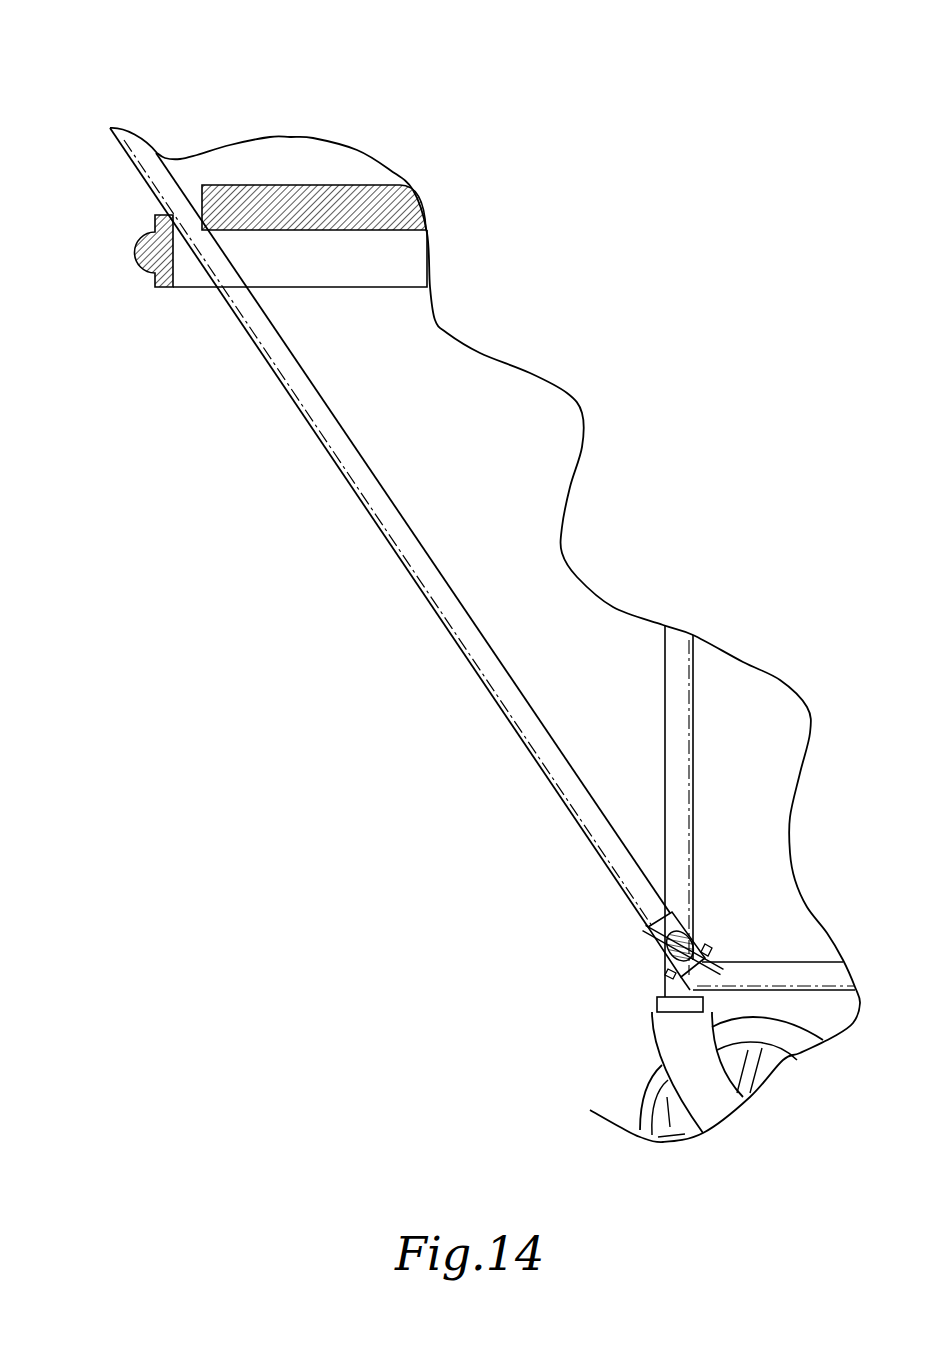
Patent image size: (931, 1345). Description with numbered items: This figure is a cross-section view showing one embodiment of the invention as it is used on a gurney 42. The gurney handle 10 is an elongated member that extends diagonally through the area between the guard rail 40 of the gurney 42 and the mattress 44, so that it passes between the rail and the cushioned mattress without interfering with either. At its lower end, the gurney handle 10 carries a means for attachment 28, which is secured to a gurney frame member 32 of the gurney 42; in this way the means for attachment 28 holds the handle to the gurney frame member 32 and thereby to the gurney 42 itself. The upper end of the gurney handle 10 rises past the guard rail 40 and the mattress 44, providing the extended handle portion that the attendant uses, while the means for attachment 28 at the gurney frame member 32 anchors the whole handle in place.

The gurney handle 10 is at (313, 437).
The guard rail 40 is at (132, 257).
The mattress 44 is at (310, 187).
The gurney 42 is at (663, 677).
The means for attachment 28 is at (650, 928).
The gurney frame member 32 is at (663, 952).